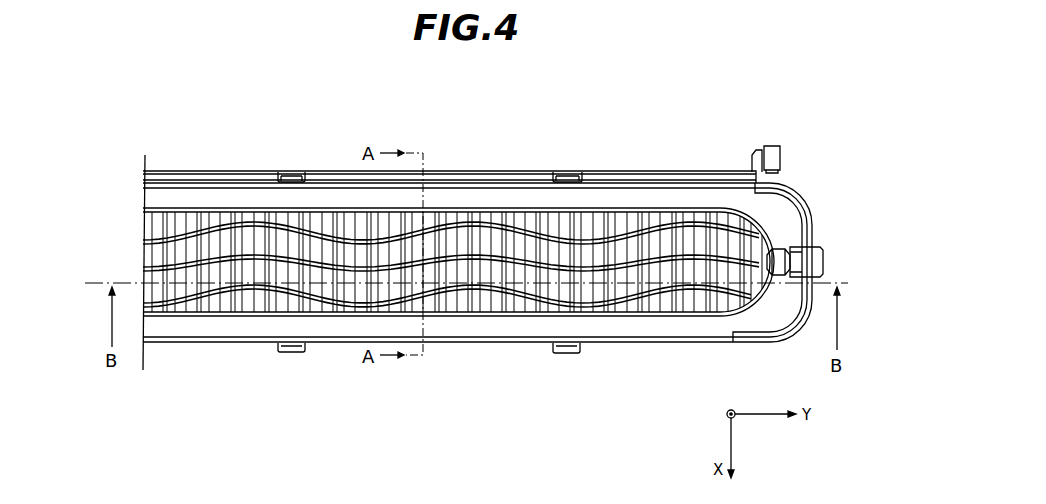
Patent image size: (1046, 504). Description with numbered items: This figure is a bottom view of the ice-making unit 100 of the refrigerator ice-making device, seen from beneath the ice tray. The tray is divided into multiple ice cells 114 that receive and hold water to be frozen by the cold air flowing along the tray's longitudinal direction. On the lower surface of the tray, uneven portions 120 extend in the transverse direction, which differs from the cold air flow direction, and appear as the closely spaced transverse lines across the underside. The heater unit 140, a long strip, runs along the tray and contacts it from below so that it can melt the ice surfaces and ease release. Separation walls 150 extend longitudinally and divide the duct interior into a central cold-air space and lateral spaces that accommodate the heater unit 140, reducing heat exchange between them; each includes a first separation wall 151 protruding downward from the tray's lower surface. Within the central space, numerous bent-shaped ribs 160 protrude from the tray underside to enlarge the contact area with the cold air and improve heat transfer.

The ice-making unit 100 is at (466, 270).
The ice cells 114 is at (258, 233).
The uneven portions 120 is at (225, 302).
The heater unit 140 is at (605, 197).
The separation walls 150 is at (483, 230).
The first separation wall 151 is at (692, 210).
The ribs 160 is at (484, 300).